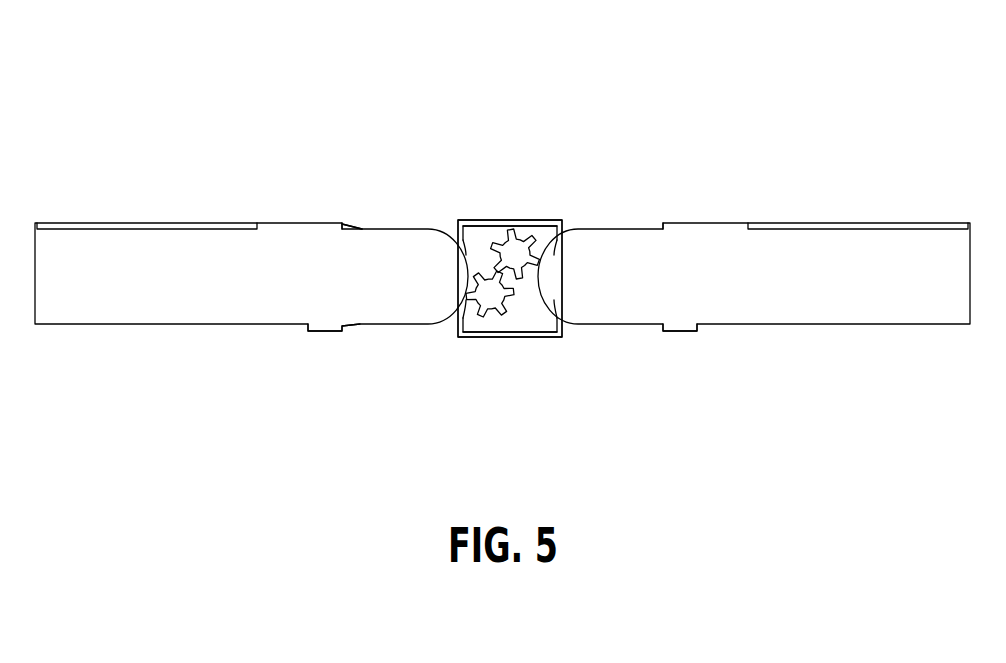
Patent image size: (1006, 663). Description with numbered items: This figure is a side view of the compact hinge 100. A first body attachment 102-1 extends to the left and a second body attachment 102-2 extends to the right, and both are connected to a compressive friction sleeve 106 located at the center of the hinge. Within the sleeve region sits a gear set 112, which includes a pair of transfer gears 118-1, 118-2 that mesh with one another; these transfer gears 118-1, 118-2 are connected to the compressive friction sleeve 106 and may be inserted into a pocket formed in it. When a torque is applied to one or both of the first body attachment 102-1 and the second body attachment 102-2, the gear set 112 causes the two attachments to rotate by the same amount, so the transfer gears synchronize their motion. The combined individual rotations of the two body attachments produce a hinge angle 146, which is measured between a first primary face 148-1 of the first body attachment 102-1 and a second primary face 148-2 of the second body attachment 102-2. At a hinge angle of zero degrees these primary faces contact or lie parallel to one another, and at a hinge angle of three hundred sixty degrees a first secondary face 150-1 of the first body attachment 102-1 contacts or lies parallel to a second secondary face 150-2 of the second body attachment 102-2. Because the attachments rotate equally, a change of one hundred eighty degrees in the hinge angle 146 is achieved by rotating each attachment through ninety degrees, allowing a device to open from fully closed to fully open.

The compact hinge 100 is at (862, 62).
The first body attachment 102-1 is at (148, 262).
The second body attachment 102-2 is at (857, 262).
The compressive friction sleeve 106 is at (474, 244).
The gear set 112 is at (516, 348).
The transfer gear 118-1 is at (478, 302).
The transfer gear 118-2 is at (520, 245).
The hinge angle 146 is at (405, 226).
The first primary face 148-1 is at (300, 213).
The second primary face 148-2 is at (703, 213).
The first secondary face 150-1 is at (327, 342).
The second secondary face 150-2 is at (676, 342).